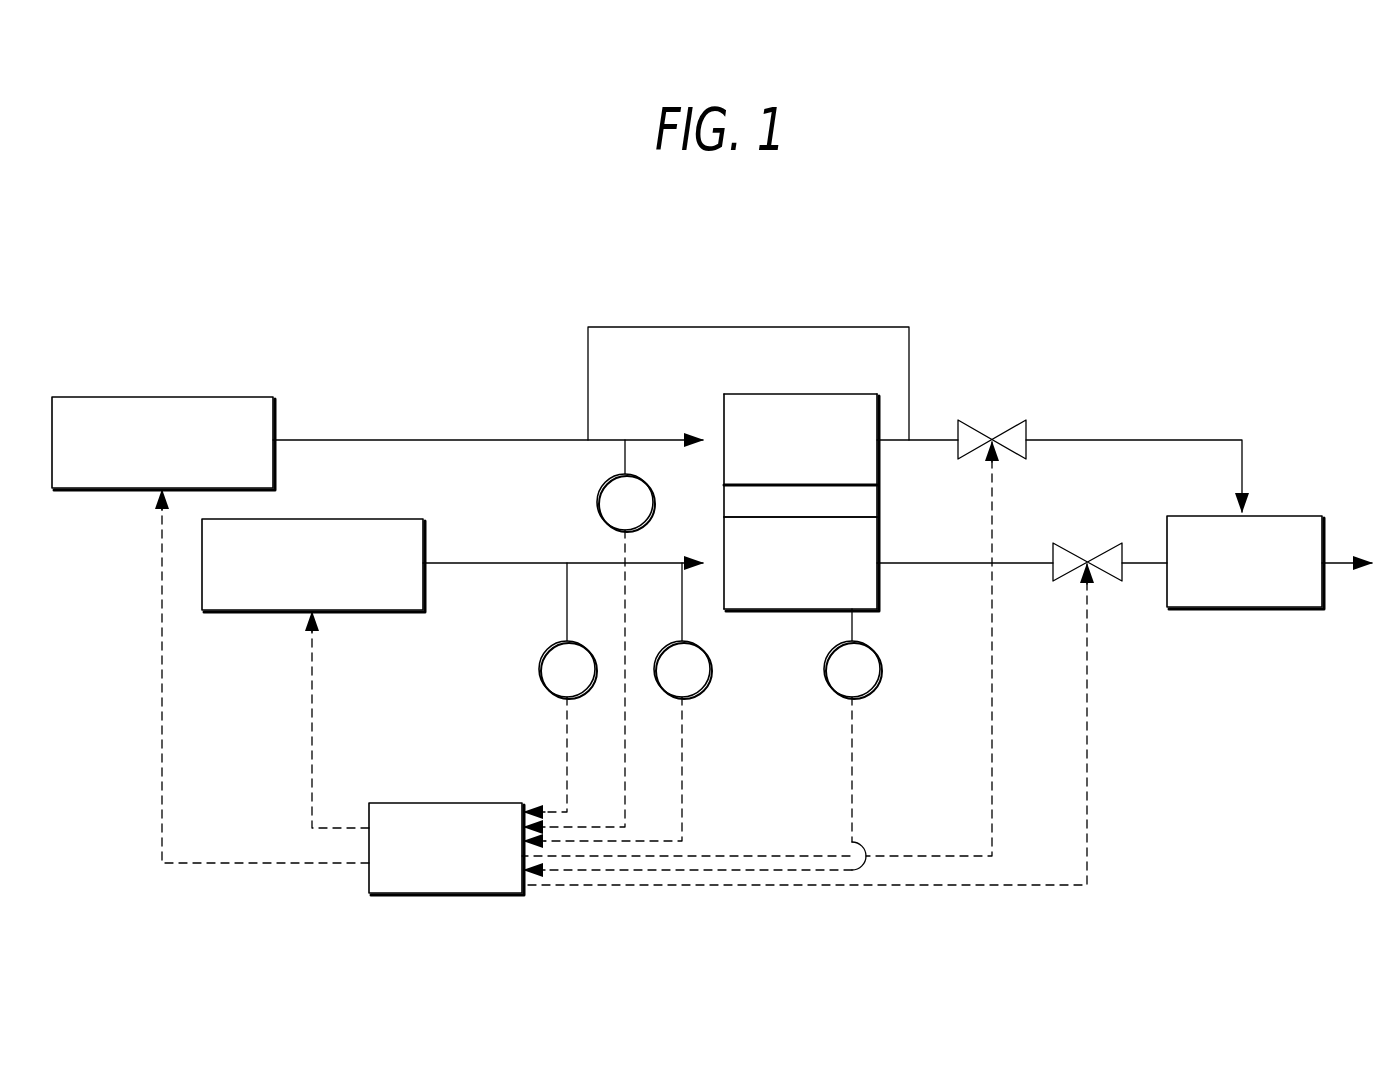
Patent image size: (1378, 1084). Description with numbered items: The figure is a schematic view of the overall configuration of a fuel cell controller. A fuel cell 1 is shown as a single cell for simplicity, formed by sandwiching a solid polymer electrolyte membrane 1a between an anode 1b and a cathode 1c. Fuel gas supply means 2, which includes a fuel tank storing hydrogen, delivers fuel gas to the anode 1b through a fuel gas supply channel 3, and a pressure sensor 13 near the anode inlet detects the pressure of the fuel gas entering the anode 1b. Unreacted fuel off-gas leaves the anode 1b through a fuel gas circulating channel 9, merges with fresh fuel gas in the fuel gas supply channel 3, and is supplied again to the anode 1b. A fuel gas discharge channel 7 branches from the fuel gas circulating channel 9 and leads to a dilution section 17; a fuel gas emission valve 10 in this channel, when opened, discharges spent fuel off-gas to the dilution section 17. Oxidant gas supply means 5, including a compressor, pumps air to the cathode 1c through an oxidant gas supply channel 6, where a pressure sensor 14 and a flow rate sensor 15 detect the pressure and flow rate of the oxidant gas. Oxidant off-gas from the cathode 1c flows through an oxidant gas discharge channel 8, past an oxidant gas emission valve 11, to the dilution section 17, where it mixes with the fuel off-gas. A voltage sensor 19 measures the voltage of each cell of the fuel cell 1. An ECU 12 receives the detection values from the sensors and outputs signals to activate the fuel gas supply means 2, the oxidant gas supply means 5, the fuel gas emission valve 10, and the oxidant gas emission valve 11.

The fuel cell 1 is at (852, 392).
The solid polymer electrolyte membrane 1a is at (878, 500).
The anode 1b is at (765, 393).
The cathode 1c is at (808, 610).
The fuel gas supply means 2 is at (160, 396).
The fuel gas supply channel 3 is at (377, 438).
The oxidant gas supply means 5 is at (317, 518).
The oxidant gas supply channel 6 is at (465, 562).
The fuel gas discharge channel 7 is at (1117, 439).
The oxidant gas discharge channel 8 is at (1010, 562).
The fuel gas circulating channel 9 is at (722, 326).
The fuel gas emission valve 10 is at (975, 419).
The oxidant gas emission valve 11 is at (1072, 542).
The ECU 12 is at (433, 802).
The pressure sensor 13 is at (597, 515).
The pressure sensor 14 is at (543, 688).
The flow rate sensor 15 is at (708, 688).
The dilution section 17 is at (1285, 515).
The voltage sensor 19 is at (878, 688).